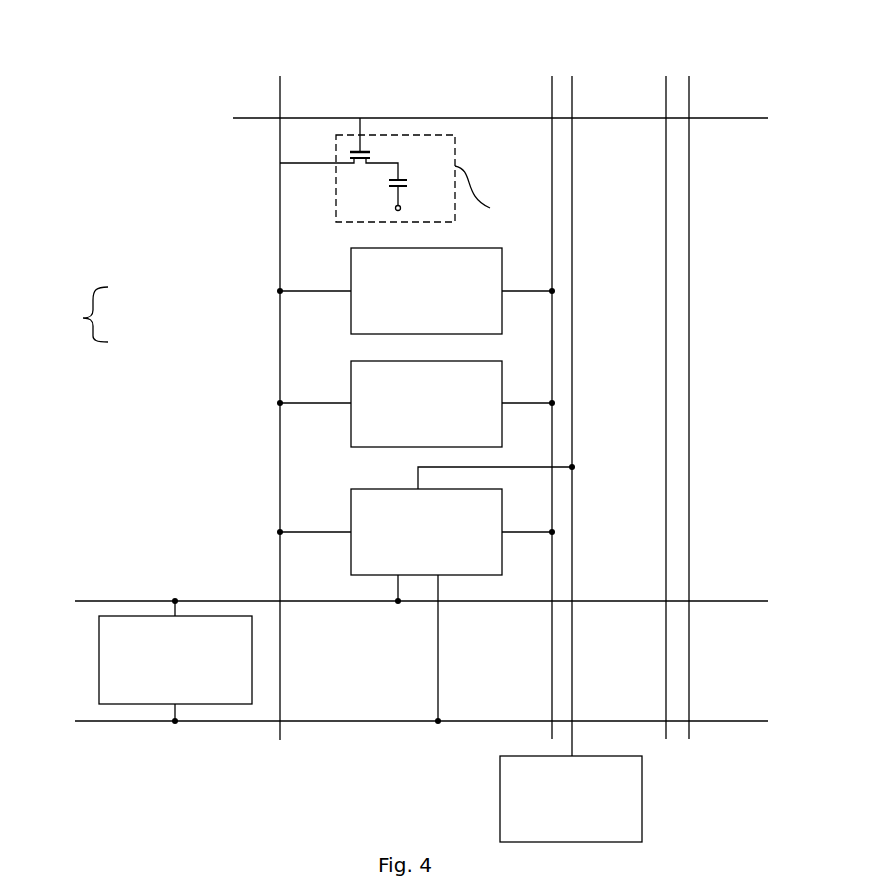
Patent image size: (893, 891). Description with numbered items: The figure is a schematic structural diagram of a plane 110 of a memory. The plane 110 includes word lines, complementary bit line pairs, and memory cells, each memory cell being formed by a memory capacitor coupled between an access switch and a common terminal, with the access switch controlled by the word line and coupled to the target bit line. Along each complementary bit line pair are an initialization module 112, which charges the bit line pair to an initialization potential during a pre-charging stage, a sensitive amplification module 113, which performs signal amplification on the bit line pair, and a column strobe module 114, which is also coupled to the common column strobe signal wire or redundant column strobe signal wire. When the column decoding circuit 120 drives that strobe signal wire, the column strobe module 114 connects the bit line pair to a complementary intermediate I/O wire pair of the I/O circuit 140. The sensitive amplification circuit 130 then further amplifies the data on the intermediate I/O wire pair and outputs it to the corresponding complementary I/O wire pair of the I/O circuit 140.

The plane 110 is at (489, 47).
The initialization module 112 is at (351, 282).
The sensitive amplification module 113 is at (351, 398).
The column strobe module 114 is at (351, 526).
The column decoding circuit 120 is at (642, 800).
The sensitive amplification circuit 130 is at (157, 615).
The I/O circuit 140 is at (409, 517).